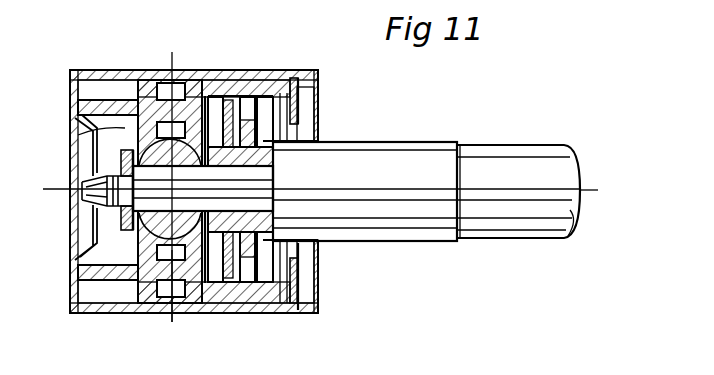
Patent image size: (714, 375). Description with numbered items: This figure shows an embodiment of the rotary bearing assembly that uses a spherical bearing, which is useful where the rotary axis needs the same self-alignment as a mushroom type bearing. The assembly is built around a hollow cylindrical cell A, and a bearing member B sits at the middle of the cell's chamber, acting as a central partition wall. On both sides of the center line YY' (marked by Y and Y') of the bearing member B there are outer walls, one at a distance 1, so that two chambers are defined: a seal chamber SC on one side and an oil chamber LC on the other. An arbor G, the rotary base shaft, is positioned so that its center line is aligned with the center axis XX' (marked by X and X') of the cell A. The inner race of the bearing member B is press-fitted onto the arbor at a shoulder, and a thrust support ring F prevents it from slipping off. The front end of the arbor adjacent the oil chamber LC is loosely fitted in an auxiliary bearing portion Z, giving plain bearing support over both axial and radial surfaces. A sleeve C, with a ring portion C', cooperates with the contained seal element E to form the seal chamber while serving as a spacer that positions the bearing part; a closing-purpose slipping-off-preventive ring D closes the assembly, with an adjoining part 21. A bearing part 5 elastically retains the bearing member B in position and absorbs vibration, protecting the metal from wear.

The hollow cylindrical cell A is at (110, 71).
The bearing member B is at (158, 148).
The sleeve C is at (241, 154).
The collar ring C' is at (289, 222).
The seal chamber SC is at (214, 112).
The retaining bar 21 is at (307, 99).
The closing-purpose slipping-off-preventive ring D is at (299, 278).
The seal element E is at (256, 159).
The arbor G is at (405, 144).
The center axis X is at (303, 192).
The center axis X' is at (602, 196).
The center line Y is at (173, 174).
The center line Y' is at (171, 300).
The distance 1 is at (80, 201).
The thrust support ring F is at (121, 158).
The auxiliary bearing portion Z is at (90, 234).
The bearing part 5 is at (143, 126).
The oil chamber LC is at (104, 252).